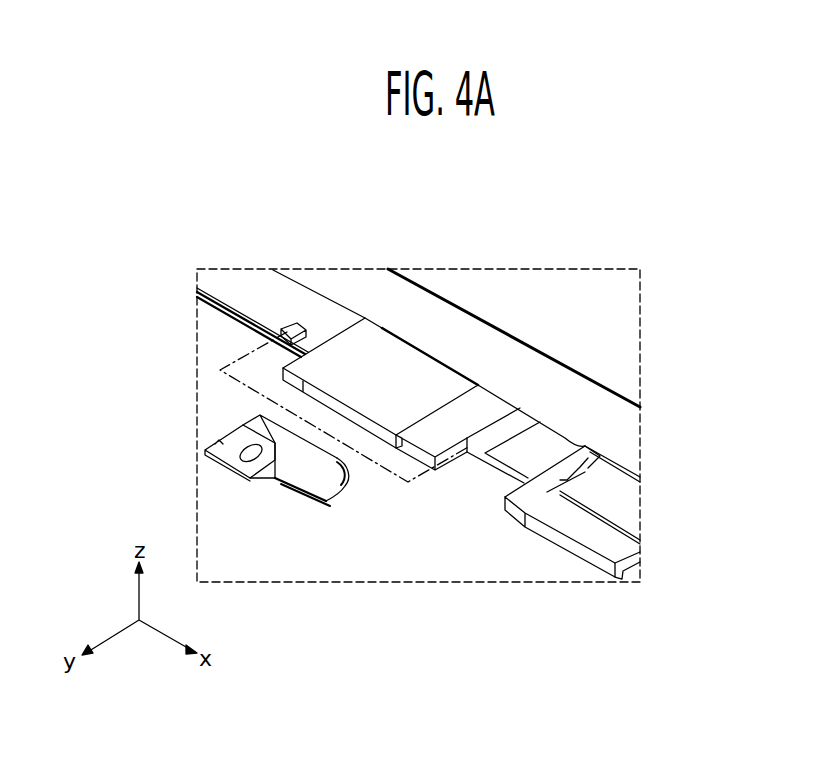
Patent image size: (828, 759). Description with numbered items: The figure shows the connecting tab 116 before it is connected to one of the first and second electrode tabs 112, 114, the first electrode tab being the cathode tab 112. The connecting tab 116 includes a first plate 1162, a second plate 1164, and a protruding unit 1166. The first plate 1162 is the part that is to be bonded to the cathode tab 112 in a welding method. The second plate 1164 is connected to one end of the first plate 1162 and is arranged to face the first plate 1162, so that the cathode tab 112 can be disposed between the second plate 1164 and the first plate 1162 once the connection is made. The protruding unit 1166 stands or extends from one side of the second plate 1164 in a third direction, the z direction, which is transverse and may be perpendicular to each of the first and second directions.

The cathode tab 112 is at (372, 357).
The second electrode tab 114 is at (548, 532).
The connecting tab 116 is at (228, 478).
The first plate 1162 is at (333, 497).
The second plate 1164 is at (300, 485).
The protruding unit 1166 is at (252, 472).